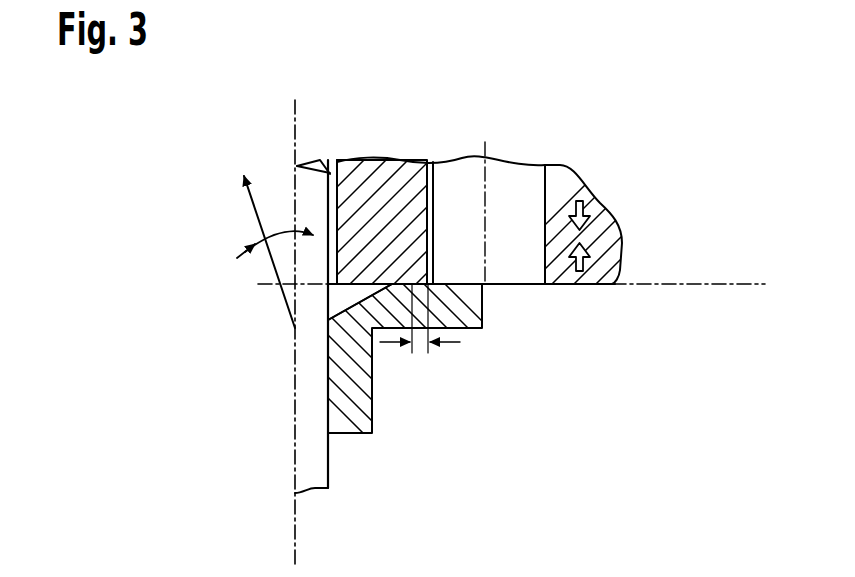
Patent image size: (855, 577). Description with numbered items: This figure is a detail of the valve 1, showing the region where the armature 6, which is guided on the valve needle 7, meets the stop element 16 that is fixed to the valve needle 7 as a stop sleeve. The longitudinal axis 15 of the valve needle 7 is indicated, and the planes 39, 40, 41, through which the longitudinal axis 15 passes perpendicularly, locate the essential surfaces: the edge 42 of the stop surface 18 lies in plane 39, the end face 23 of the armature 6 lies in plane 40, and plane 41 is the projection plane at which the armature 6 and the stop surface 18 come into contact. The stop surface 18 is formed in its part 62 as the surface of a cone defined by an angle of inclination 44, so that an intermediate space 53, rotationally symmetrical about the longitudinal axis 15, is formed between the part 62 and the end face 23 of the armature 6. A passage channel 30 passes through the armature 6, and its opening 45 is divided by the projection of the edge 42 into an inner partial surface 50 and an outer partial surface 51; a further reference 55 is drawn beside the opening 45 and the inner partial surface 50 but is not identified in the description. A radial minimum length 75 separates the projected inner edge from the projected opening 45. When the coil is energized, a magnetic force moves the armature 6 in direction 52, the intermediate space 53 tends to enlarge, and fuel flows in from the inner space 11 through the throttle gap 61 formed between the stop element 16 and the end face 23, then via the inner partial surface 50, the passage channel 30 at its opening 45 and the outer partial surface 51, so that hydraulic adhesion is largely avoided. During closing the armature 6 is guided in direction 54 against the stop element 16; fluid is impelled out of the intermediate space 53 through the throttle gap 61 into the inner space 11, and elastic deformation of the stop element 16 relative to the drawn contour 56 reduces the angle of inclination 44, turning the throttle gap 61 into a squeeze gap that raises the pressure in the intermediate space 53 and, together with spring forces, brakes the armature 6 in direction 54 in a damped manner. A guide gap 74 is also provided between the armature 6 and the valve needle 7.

The valve 1 is at (702, 117).
The armature 6 is at (337, 182).
The valve needle 7 is at (307, 458).
The inner space 11 is at (592, 462).
The longitudinal axis 15 is at (295, 526).
The stop element 16 is at (372, 422).
The stop surface 18 is at (262, 252).
The conical part of stop surface 62 is at (382, 283).
The end face 23 is at (590, 305).
The passage channel 30 is at (525, 182).
The plane 39 is at (512, 319).
The plane 40 is at (512, 319).
The projection plane 41 is at (725, 286).
The edge 42 is at (483, 288).
The angle of inclination 44 is at (277, 234).
The opening 45 is at (422, 187).
The inner partial surface 50 is at (422, 187).
The gap section 55 is at (433, 283).
The outer partial surface 51 is at (499, 283).
The direction 52 is at (590, 247).
The intermediate space 53 is at (343, 300).
The direction 54 is at (590, 210).
The contour 56 is at (372, 394).
The throttle gap 61 is at (424, 282).
The guide gap 74 is at (297, 166).
The radial minimum length 75 is at (412, 353).